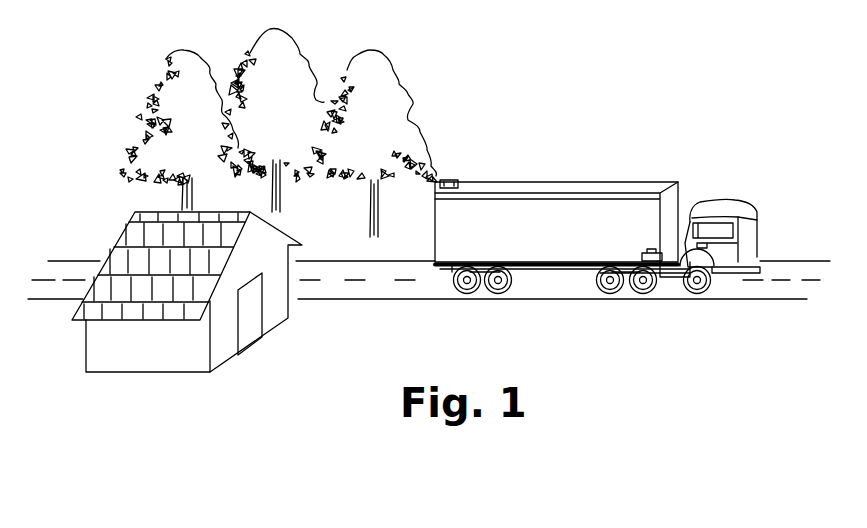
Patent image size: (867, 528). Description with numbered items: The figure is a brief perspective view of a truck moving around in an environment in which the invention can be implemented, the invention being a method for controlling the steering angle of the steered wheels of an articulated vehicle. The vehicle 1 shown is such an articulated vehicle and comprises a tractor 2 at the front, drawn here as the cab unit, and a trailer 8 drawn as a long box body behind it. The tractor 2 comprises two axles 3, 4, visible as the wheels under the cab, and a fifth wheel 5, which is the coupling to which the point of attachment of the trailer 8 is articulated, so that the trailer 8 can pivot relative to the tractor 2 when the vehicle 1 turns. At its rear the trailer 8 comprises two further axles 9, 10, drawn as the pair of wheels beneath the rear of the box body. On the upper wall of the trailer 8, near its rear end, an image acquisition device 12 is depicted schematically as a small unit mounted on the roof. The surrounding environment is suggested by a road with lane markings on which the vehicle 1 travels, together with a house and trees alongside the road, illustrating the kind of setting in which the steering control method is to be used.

The vehicle 1 is at (652, 140).
The tractor 2 is at (757, 218).
The axle 3 is at (698, 292).
The axle 4 is at (642, 290).
The fifth wheel 5 is at (656, 252).
The trailer 8 is at (564, 188).
The axle 9 is at (457, 291).
The axle 10 is at (510, 290).
The image acquisition device 12 is at (450, 178).